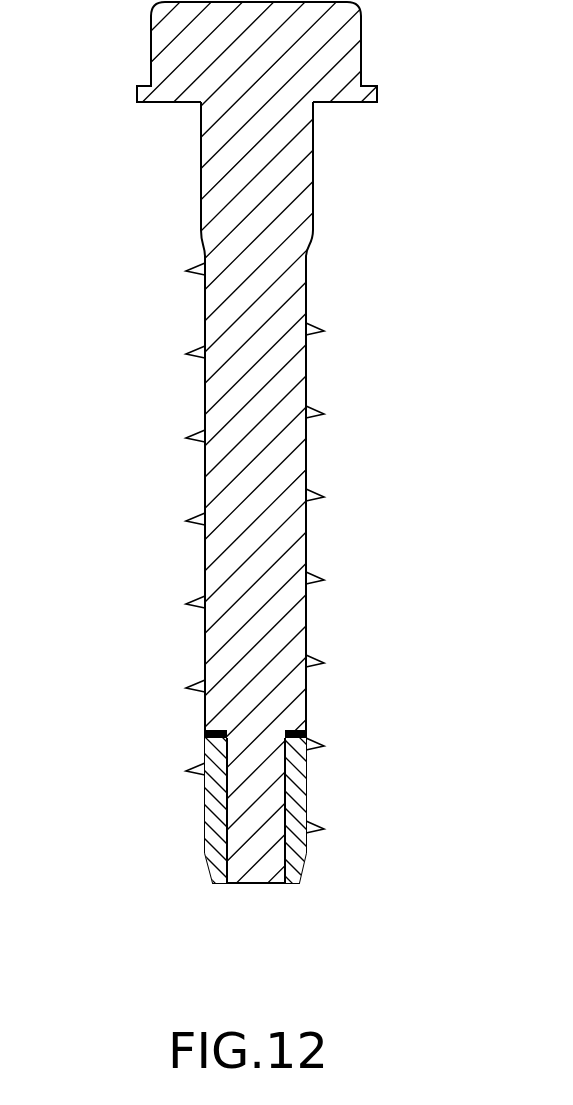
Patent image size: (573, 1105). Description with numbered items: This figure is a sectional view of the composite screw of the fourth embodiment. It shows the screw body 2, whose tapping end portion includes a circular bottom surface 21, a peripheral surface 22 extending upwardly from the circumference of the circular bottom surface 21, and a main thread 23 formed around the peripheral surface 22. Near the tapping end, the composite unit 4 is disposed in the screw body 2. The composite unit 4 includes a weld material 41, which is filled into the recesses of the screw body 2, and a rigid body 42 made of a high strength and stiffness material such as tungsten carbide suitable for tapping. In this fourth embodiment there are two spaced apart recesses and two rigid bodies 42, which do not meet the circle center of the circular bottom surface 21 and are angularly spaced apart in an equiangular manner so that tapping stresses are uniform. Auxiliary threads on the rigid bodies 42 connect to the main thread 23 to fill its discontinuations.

The screw body 2 is at (372, 181).
The circular bottom surface 21 is at (253, 883).
The peripheral surface 22 is at (300, 373).
The main thread 23 is at (190, 352).
The composite unit 4 is at (250, 791).
The weld material 41 is at (208, 732).
The rigid body 42 is at (215, 805).